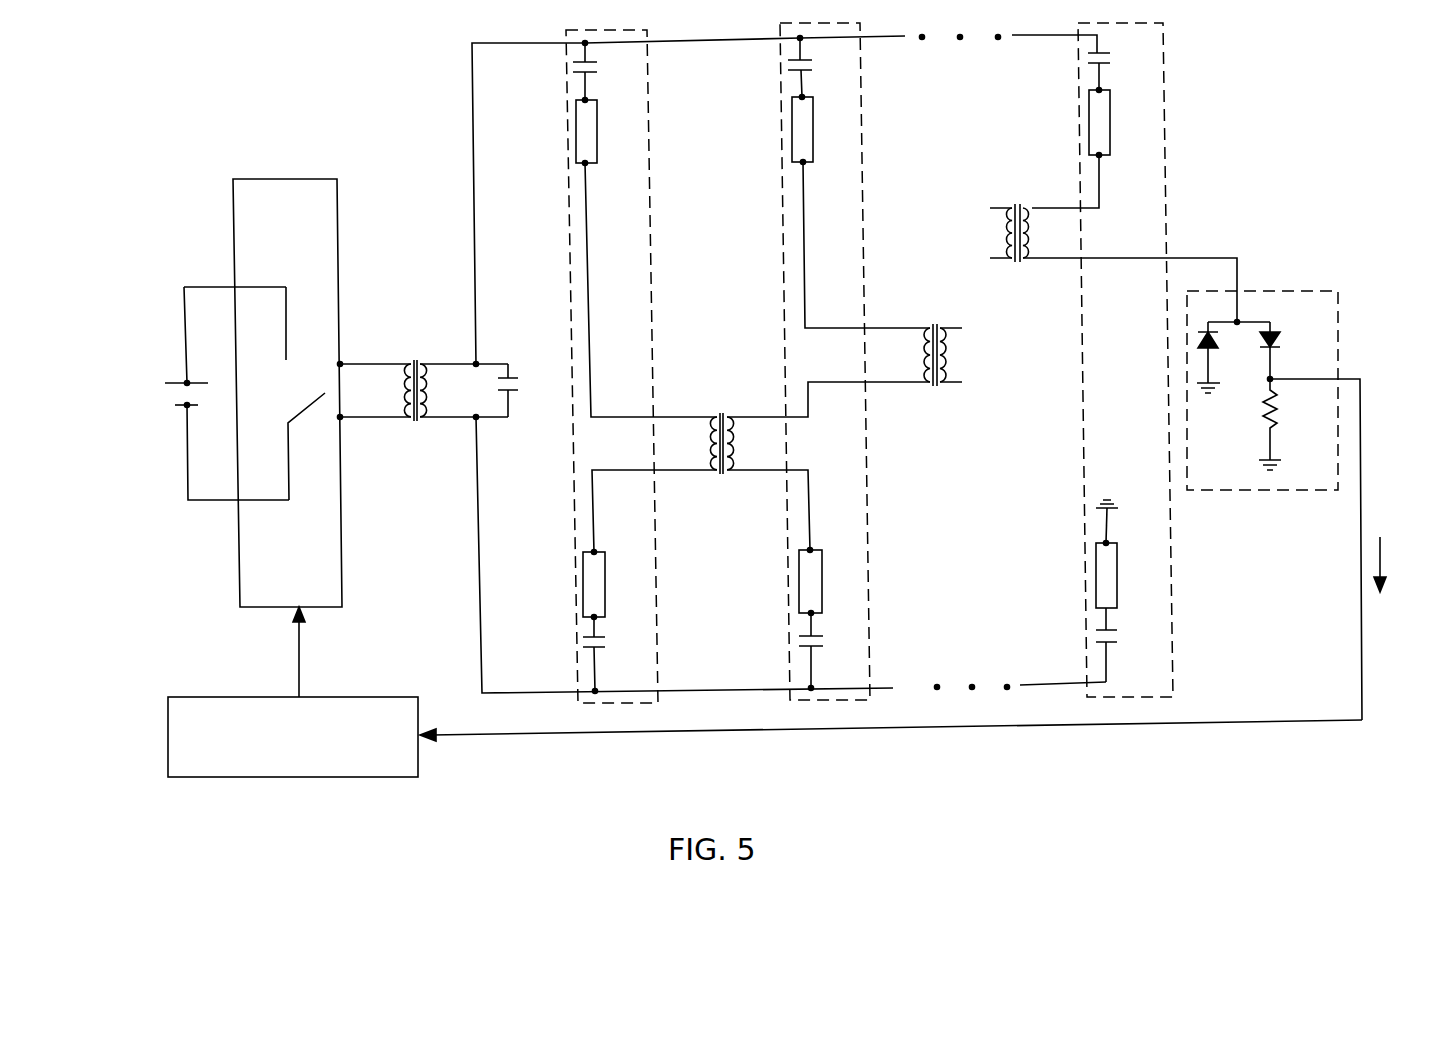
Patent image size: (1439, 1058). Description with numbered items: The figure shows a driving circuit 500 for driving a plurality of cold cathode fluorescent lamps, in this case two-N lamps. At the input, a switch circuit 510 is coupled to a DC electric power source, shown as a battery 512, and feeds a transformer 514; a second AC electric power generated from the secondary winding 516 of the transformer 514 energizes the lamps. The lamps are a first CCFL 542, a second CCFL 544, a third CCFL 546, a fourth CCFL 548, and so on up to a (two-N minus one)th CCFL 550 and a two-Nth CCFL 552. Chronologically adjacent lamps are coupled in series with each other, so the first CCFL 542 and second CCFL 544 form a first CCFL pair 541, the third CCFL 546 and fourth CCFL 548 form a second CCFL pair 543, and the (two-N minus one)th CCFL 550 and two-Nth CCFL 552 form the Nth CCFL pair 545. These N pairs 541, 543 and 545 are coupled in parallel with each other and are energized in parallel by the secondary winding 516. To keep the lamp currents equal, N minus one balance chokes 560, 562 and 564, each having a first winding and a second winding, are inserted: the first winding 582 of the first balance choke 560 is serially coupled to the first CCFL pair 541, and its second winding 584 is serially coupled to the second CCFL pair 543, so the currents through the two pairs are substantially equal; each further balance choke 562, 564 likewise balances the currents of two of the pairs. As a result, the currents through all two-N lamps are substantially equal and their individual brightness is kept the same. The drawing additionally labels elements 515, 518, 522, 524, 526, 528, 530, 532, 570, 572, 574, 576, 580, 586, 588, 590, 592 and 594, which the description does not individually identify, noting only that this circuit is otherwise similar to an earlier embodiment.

The driving circuit 500 is at (242, 118).
The switch circuit 510 is at (328, 607).
The battery 512 is at (184, 381).
The transformer 514 is at (409, 362).
The primary winding terminal 515 is at (405, 420).
The secondary winding 516 is at (425, 421).
The capacitor 518 is at (516, 390).
The capacitor 522 is at (593, 74).
The capacitor 524 is at (809, 72).
The capacitor 526 is at (1104, 65).
The capacitor 528 is at (1111, 644).
The capacitor 530 is at (813, 648).
The capacitor 532 is at (600, 649).
The first CCFL pair 541 is at (651, 246).
The first CCFL 542 is at (592, 165).
The second CCFL pair 543 is at (864, 246).
The second CCFL 544 is at (600, 552).
The Nth CCFL pair 545 is at (1080, 125).
The third CCFL 546 is at (807, 164).
The fourth CCFL 548 is at (813, 550).
The (2N-1)th CCFL 550 is at (1104, 157).
The 2Nth CCFL 552 is at (1110, 543).
The first balance choke 560 is at (716, 414).
The balance choke 562 is at (929, 326).
The balance choke 564 is at (1011, 206).
The rectifier / feedback block 570 is at (1311, 288).
The diode 572 is at (1274, 350).
The diode 574 is at (1212, 350).
The resistor 576 is at (1276, 424).
The controller 580 is at (362, 697).
The first winding 582 is at (714, 472).
The second winding 584 is at (731, 472).
The transformer primary winding 586 is at (926, 384).
The transformer secondary winding 588 is at (944, 384).
The output 590 is at (1382, 550).
The transformer primary winding 592 is at (1009, 261).
The transformer secondary winding 594 is at (1029, 261).